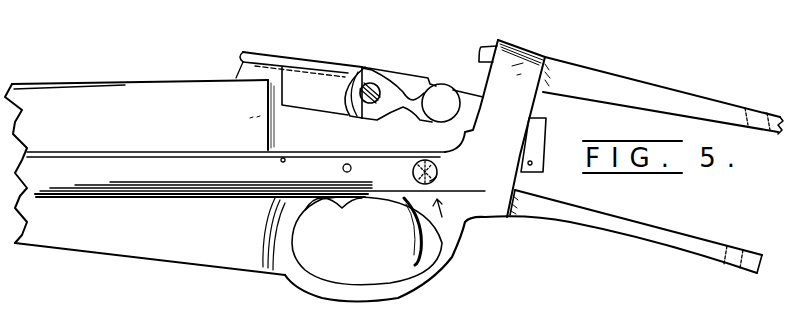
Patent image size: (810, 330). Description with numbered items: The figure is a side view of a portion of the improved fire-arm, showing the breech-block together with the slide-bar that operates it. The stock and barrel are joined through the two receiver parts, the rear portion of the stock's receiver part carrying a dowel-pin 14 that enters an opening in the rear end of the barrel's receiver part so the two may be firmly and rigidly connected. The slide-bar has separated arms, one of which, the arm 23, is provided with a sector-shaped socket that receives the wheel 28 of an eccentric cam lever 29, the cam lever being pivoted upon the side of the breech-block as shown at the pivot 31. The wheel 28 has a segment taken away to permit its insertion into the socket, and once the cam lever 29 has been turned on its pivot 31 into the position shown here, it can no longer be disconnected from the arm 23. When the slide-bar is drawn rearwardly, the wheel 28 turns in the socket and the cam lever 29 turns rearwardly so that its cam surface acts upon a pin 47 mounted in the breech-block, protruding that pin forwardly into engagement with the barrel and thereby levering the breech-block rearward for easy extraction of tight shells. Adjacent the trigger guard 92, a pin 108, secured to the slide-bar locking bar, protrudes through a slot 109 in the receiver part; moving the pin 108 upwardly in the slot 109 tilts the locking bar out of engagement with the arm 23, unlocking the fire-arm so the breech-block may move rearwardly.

The dowel-pin 14 is at (490, 42).
The arm 23 is at (414, 128).
The wheel 28 is at (443, 93).
The eccentric cam lever 29 is at (393, 87).
The pivot 31 is at (376, 82).
The pin 47 is at (248, 53).
The trigger guard 92 is at (388, 292).
The pin 108 is at (435, 178).
The slot 109 is at (418, 174).